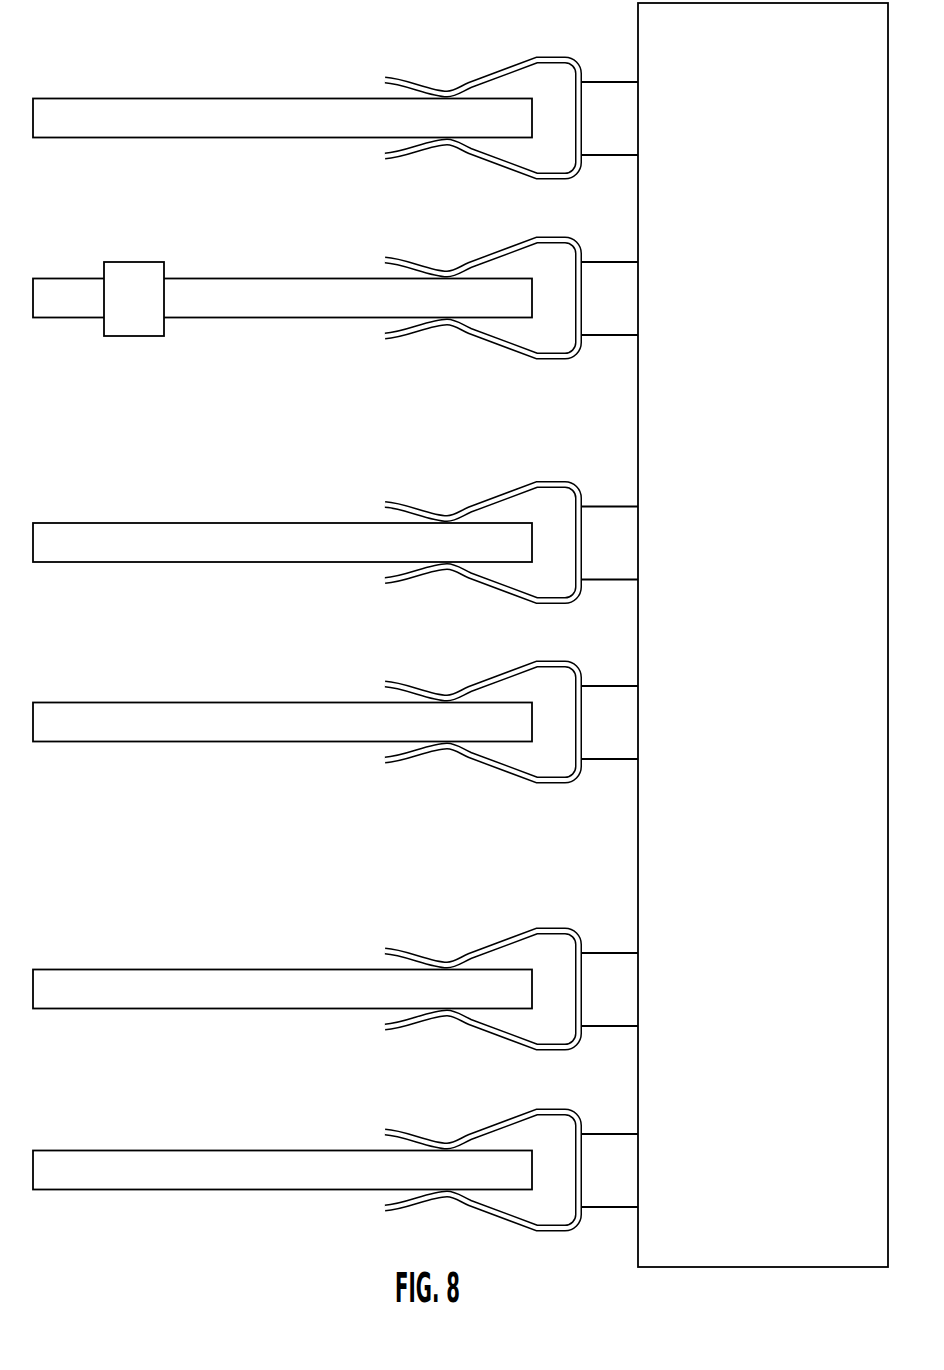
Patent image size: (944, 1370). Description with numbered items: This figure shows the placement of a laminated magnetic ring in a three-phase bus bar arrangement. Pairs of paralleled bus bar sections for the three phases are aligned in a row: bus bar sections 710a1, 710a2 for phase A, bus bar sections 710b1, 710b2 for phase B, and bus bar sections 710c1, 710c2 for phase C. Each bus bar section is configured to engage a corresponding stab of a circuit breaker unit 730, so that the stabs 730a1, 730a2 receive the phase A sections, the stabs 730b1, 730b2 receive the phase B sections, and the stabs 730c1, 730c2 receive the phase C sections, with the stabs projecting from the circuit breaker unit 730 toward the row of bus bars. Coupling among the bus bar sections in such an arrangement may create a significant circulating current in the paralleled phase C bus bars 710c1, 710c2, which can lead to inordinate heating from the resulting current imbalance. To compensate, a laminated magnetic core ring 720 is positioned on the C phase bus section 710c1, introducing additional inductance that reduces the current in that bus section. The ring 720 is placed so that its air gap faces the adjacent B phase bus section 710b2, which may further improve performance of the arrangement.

The circuit breaker unit 730 is at (777, 648).
The laminated magnetic core ring 720 is at (117, 262).
The bus bar section 710c2 is at (145, 99).
The bus bar section 710c1 is at (283, 279).
The bus bar section 710b2 is at (145, 523).
The bus bar section 710b1 is at (145, 703).
The bus bar section 710a2 is at (145, 970).
The bus bar section 710a1 is at (145, 1150).
The stab 730c1 is at (533, 58).
The stab 730c2 is at (535, 238).
The stab 730b1 is at (535, 482).
The stab 730b2 is at (535, 662).
The stab 730a1 is at (533, 928).
The stab 730a2 is at (535, 1109).